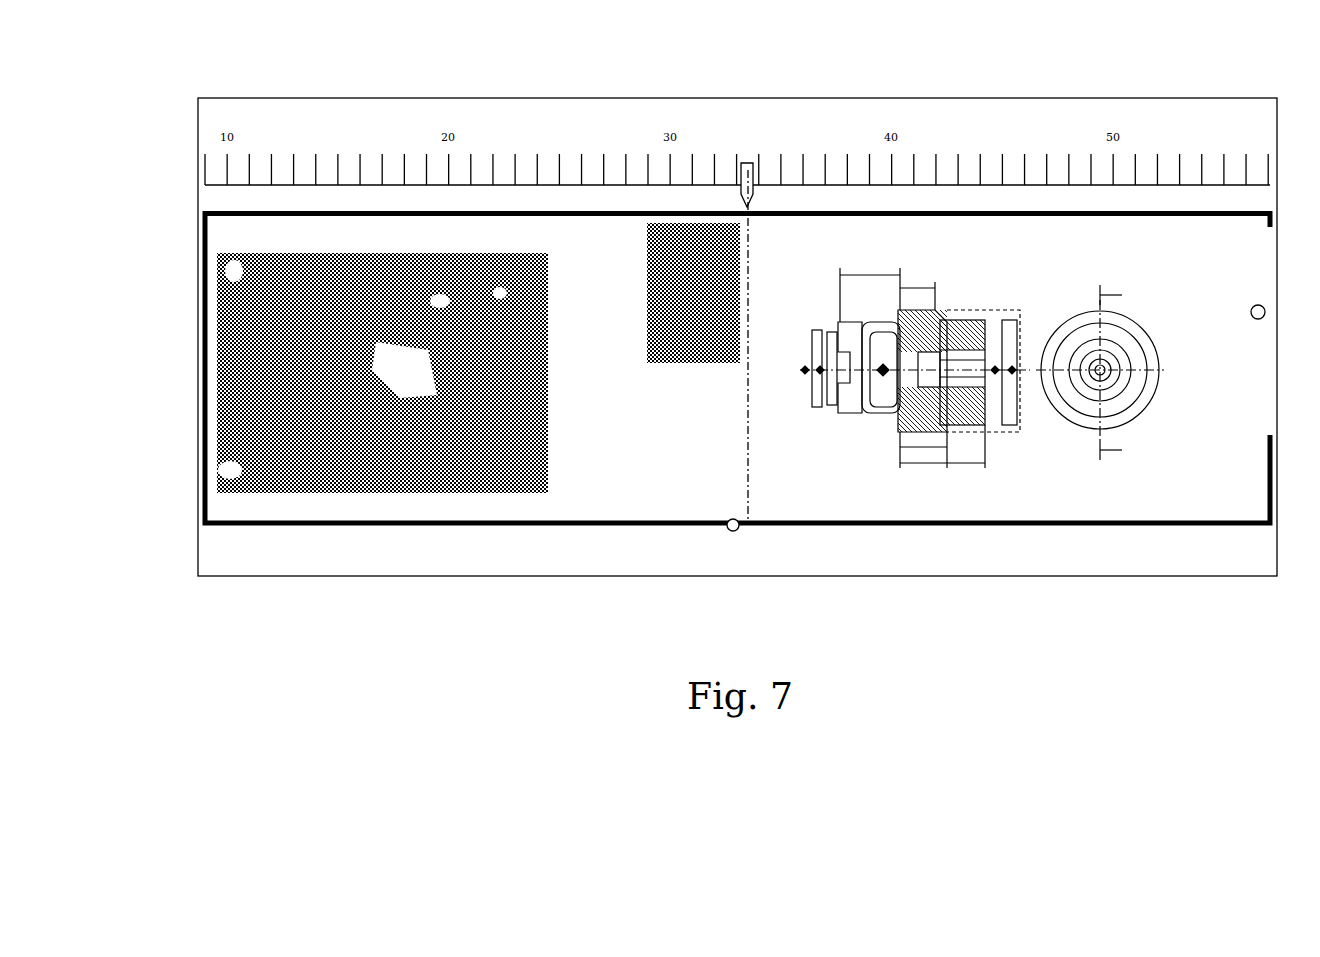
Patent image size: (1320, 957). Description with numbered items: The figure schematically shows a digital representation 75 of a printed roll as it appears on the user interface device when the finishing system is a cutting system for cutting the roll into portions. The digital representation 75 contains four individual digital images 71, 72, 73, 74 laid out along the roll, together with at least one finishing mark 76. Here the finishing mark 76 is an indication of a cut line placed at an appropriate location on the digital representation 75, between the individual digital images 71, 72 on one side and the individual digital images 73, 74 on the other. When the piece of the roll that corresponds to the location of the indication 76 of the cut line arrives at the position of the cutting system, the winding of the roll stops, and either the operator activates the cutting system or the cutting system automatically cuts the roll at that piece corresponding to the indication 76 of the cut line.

The individual digital image 71 is at (475, 480).
The individual digital image 72 is at (711, 353).
The individual digital image 73 is at (1162, 483).
The individual digital image 74 is at (1248, 335).
The digital representation 75 is at (1099, 523).
The finishing mark 76 is at (747, 163).